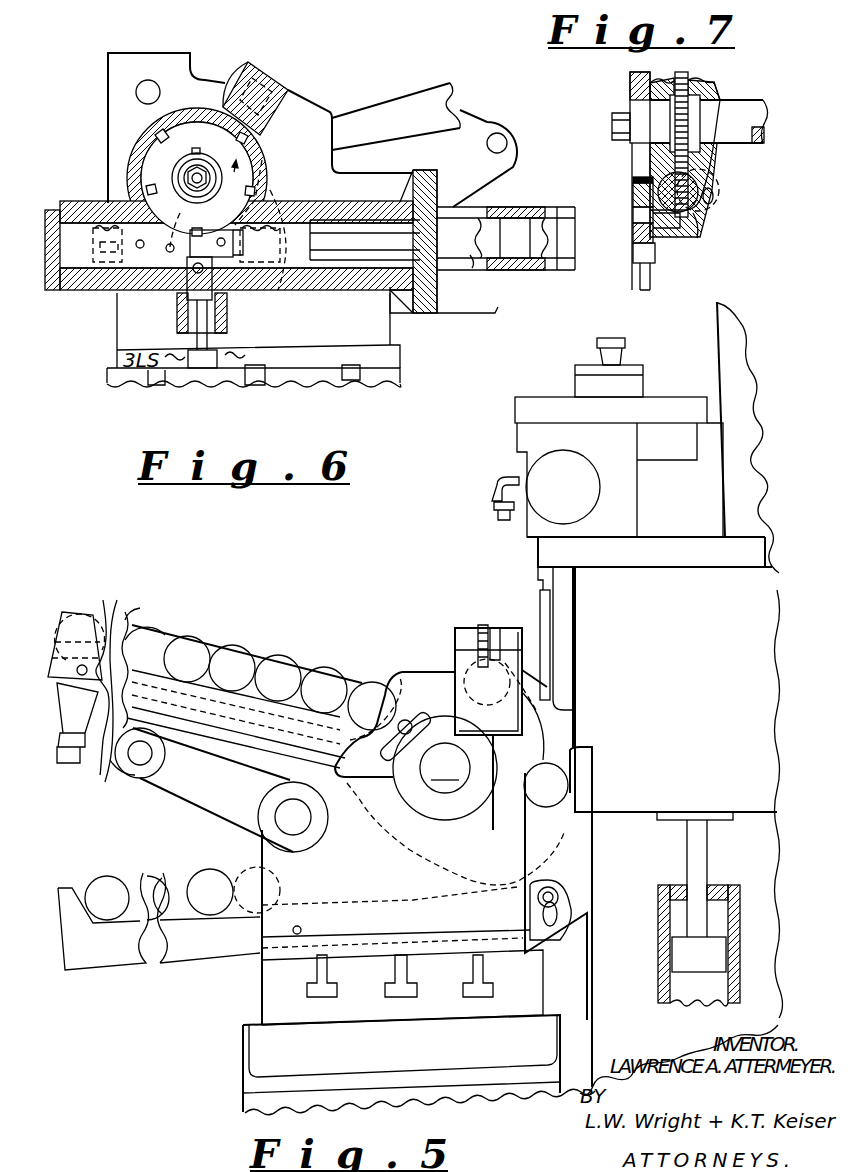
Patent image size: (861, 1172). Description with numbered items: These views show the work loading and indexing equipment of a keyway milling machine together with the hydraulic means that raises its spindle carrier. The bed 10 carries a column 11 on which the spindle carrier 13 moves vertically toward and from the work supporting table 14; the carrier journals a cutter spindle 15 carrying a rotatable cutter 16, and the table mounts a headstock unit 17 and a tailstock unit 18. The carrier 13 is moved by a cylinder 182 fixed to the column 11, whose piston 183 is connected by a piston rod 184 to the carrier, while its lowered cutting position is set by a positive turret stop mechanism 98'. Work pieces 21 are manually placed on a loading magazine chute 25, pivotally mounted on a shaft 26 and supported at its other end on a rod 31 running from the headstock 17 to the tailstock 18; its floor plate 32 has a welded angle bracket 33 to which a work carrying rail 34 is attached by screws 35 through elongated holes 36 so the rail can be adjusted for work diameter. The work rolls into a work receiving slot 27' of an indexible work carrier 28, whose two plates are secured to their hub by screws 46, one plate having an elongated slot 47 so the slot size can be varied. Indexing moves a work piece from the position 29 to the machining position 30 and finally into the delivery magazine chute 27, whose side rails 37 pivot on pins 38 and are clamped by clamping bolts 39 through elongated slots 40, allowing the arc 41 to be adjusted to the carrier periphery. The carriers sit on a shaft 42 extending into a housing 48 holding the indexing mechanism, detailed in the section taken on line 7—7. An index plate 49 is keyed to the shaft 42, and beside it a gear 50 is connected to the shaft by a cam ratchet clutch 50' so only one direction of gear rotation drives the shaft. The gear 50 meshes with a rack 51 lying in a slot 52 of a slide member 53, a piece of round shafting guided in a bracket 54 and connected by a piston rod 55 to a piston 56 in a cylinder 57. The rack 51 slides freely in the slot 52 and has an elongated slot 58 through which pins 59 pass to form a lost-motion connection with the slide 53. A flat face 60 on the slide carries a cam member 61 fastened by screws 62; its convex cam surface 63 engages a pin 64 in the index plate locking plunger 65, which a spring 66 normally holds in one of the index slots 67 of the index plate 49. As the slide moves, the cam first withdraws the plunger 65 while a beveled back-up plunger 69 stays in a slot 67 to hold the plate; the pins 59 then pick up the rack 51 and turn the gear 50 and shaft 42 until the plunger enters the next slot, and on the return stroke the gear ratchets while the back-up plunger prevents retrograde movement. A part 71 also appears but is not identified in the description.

In FIG. 6, the section line 7— 7 is at (192, 48).
In FIG. 5, the bed 10 is at (247, 1104).
In FIG. 5, the column 11 is at (745, 477).
In FIG. 5, the spindle carrier 13 is at (764, 593).
In FIG. 6, the work supporting table 14 is at (109, 378).
In FIG. 5, the work supporting table 14 is at (265, 990).
In FIG. 5, the cutter spindle 15 is at (543, 607).
In FIG. 5, the cutter 16 is at (483, 627).
In FIG. 6, the headstock unit 17 is at (377, 358).
In FIG. 5, the tailstock unit 18 is at (452, 950).
In FIG. 5, the work piece 21 is at (352, 685).
In FIG. 5, the loading magazine chute 25 is at (258, 640).
In FIG. 5, the shaft 26 is at (295, 818).
In FIG. 5, the delivery magazine chute 27 is at (176, 898).
In FIG. 5, the work receiving slot 27' is at (388, 695).
In FIG. 5, the indexible work carrier 28 is at (437, 670).
In FIG. 5, the position 29 is at (373, 708).
In FIG. 6, the machining position 30 is at (145, 92).
In FIG. 5, the machining position 30 is at (538, 712).
In FIG. 6, the rod 31 is at (497, 133).
In FIG. 5, the rod 31 is at (141, 757).
In FIG. 5, the floor plate 32 is at (82, 765).
In FIG. 5, the angle bracket 33 is at (122, 787).
In FIG. 5, the work carrying rail 34 is at (95, 669).
In FIG. 5, the screws 35 is at (126, 673).
In FIG. 5, the elongated holes 36 is at (144, 607).
In FIG. 5, the side rails 37 is at (104, 955).
In FIG. 5, the pins 38 is at (292, 930).
In FIG. 5, the clamping bolts 39 is at (558, 894).
In FIG. 5, the elongated slots 40 is at (560, 910).
In FIG. 5, the arc 41 is at (594, 853).
In FIG. 6, the shaft 42 is at (195, 178).
In FIG. 7, the shaft 42 is at (745, 108).
In FIG. 5, the shaft 42 is at (445, 768).
In FIG. 5, the screws 46 is at (408, 720).
In FIG. 5, the elongated slot 47 is at (391, 744).
In FIG. 6, the housing 48 is at (62, 208).
In FIG. 6, the index plate 49 is at (150, 176).
In FIG. 7, the index plate 49 is at (638, 72).
In FIG. 7, the gear 50 is at (699, 129).
In FIG. 7, the cam ratchet clutch 50' is at (723, 95).
In FIG. 6, the rack 51 is at (262, 180).
In FIG. 7, the rack 51 is at (716, 157).
In FIG. 7, the slot 52 is at (715, 198).
In FIG. 6, the slide member 53 is at (310, 270).
In FIG. 7, the slide member 53 is at (678, 232).
In FIG. 6, the bracket 54 is at (330, 202).
In FIG. 7, the bracket 54 is at (697, 217).
In FIG. 6, the piston rod 55 is at (372, 242).
In FIG. 6, the piston 56 is at (530, 262).
In FIG. 6, the cylinder 57 is at (490, 262).
In FIG. 6, the elongated slot 58 is at (270, 226).
In FIG. 6, the pins 59 is at (232, 267).
In FIG. 7, the pins 59 is at (722, 190).
In FIG. 7, the flat face 60 is at (633, 180).
In FIG. 6, the cam member 61 is at (142, 246).
In FIG. 7, the cam member 61 is at (660, 195).
In FIG. 6, the screws 62 is at (100, 262).
In FIG. 6, the convex cam surface 63 is at (172, 250).
In FIG. 6, the pin 64 is at (200, 270).
In FIG. 7, the pin 64 is at (648, 222).
In FIG. 6, the index plate locking plunger 65 is at (195, 292).
In FIG. 7, the index plate locking plunger 65 is at (645, 255).
In FIG. 6, the spring 66 is at (210, 327).
In FIG. 6, the index slots 67 is at (211, 228).
In FIG. 6, the back-up plunger 69 is at (252, 54).
In FIG. 5, the guide rail 71 is at (522, 655).
In FIG. 5, the positive turret stop mechanism 98' is at (607, 437).
In FIG. 5, the cylinder 182 is at (742, 912).
In FIG. 5, the piston 183 is at (688, 960).
In FIG. 5, the piston rod 184 is at (707, 866).